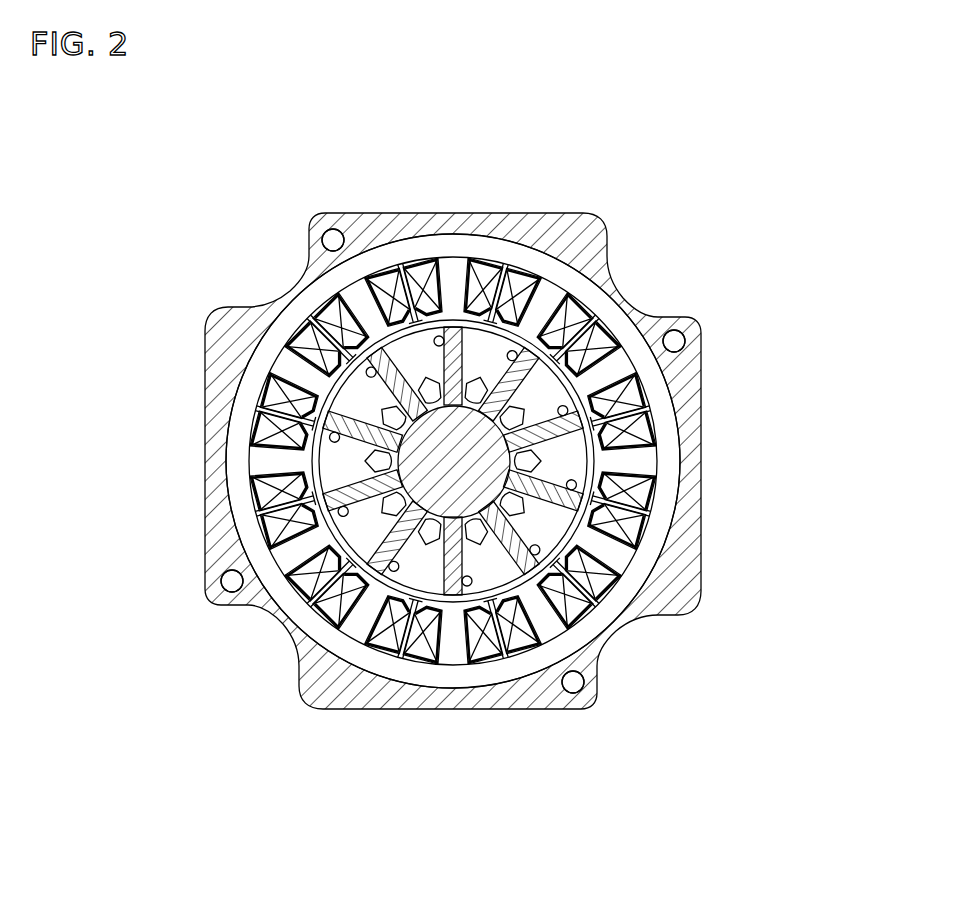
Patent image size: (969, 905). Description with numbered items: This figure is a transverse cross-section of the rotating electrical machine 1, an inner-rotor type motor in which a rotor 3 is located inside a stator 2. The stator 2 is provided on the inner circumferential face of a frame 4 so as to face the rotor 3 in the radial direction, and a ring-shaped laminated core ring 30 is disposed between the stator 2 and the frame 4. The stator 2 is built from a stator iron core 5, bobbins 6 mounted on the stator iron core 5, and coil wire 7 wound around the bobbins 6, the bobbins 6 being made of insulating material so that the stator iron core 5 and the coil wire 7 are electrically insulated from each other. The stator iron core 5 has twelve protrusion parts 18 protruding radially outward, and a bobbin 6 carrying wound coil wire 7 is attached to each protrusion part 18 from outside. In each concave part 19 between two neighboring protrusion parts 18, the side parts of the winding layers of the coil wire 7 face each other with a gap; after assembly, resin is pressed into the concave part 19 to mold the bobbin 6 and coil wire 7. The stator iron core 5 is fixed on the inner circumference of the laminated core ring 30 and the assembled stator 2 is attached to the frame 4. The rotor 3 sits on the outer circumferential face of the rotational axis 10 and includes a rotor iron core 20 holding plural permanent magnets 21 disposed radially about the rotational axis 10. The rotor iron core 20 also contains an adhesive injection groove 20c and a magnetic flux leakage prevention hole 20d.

The rotating electrical machine 1 is at (471, 471).
The stator 2 is at (491, 499).
The rotor 3 is at (225, 500).
The frame 4 is at (223, 335).
The stator iron core 5 is at (490, 499).
The bobbin 6 is at (653, 490).
The coil wire 7 is at (642, 432).
The rotational axis 10 is at (408, 458).
The protrusion parts 18 is at (615, 367).
The concave part 19 is at (310, 322).
The rotor iron core 20 is at (462, 471).
The adhesive injection groove 20c is at (439, 337).
The magnetic flux leakage prevention hole 20d is at (478, 383).
The permanent magnets 21 is at (453, 337).
The laminated core ring 30 is at (588, 293).